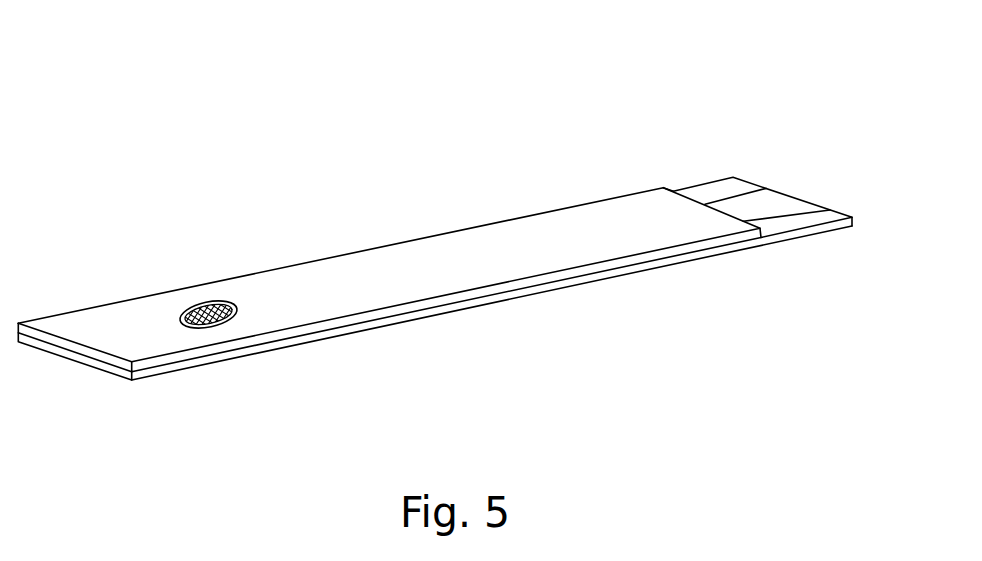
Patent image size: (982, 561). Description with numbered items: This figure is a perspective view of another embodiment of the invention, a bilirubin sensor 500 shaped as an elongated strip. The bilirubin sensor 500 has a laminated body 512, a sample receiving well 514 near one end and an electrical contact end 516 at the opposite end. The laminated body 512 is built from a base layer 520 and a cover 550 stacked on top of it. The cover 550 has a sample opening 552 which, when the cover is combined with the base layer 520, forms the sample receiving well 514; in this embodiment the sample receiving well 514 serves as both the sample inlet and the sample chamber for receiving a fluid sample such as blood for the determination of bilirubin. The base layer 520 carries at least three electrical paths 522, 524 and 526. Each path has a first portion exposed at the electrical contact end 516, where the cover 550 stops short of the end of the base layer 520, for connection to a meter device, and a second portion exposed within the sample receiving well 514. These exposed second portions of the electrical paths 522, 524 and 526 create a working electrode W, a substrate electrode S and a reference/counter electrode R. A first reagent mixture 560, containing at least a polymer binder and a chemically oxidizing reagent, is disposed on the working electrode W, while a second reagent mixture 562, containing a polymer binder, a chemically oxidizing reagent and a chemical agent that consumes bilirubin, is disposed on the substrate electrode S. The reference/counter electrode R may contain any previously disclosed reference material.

The bilirubin sensor 500 is at (202, 42).
The laminated body 512 is at (410, 240).
The sample receiving well 514 is at (183, 308).
The electrical contact end 516 is at (804, 187).
The base layer 520 is at (492, 301).
The electrical path 522 is at (726, 195).
The electrical path 524 is at (768, 205).
The electrical path 526 is at (798, 216).
The cover 550 is at (627, 262).
The sample opening 552 is at (209, 329).
The first reagent mixture 560 is at (201, 310).
The second reagent mixture 562 is at (233, 303).
The working electrode W is at (182, 315).
The substrate electrode S is at (238, 310).
The reference/counter electrode R is at (222, 322).